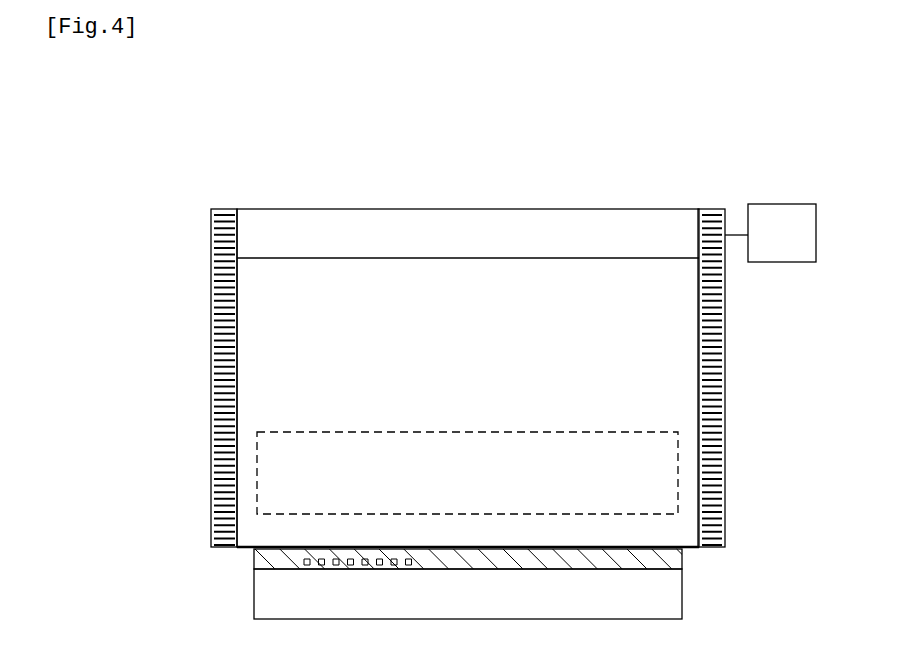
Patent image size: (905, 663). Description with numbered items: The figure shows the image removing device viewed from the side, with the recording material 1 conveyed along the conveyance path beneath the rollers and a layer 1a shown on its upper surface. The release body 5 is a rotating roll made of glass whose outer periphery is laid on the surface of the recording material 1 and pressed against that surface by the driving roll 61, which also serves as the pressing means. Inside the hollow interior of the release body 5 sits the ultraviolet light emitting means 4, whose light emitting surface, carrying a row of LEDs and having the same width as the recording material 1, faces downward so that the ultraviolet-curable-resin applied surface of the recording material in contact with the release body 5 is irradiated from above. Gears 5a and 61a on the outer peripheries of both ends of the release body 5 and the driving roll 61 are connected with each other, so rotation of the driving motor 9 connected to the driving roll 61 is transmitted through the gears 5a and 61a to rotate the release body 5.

The recording material 1 is at (259, 608).
The circuit layer 1a is at (259, 562).
The ultraviolet light emitting means 4 is at (383, 432).
The release body 5 is at (307, 323).
The gear 5a is at (218, 411).
The driving motor 9 is at (795, 262).
The driving roll 61 is at (453, 221).
The gear 61a is at (223, 213).